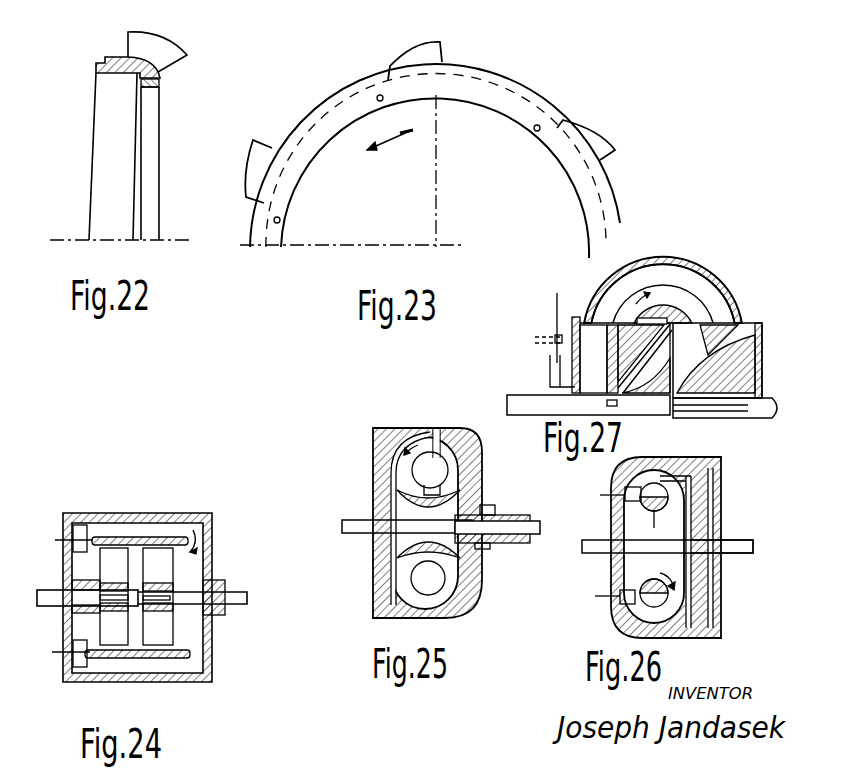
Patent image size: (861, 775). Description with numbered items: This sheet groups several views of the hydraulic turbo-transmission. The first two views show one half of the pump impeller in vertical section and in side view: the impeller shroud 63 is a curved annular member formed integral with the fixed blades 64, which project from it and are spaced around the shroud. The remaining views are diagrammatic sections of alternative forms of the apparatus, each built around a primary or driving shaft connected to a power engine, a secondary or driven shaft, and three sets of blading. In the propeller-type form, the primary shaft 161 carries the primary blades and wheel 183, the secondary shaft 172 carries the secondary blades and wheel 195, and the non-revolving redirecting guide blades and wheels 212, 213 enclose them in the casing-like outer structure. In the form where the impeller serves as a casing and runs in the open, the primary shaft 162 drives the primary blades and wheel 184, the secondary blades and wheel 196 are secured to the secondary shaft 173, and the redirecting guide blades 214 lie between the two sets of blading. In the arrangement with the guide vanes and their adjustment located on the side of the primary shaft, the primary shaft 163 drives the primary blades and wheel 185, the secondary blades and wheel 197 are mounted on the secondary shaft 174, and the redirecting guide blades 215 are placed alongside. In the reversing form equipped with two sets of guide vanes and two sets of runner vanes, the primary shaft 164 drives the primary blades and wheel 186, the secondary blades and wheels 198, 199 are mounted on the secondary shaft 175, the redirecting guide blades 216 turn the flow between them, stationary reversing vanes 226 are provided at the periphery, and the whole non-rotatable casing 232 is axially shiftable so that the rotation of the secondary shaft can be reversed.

In FIG. 22, the impeller shroud 63 is at (118, 56).
In FIG. 23, the impeller shroud 63 is at (526, 96).
In FIG. 22, the fixed blades 64 is at (171, 53).
In FIG. 23, the fixed blades 64 is at (603, 152).
In FIG. 24, the primary shaft 161 is at (55, 592).
In FIG. 25, the primary shaft 162 is at (358, 523).
In FIG. 26, the primary shaft 163 is at (593, 547).
In FIG. 27, the primary shaft 164 is at (537, 386).
In FIG. 24, the secondary shaft 172 is at (275, 583).
In FIG. 25, the secondary shaft 173 is at (526, 527).
In FIG. 26, the secondary shaft 174 is at (753, 551).
In FIG. 27, the secondary shaft 175 is at (766, 403).
In FIG. 24, the primary blades and wheel 183 is at (116, 596).
In FIG. 25, the primary blades and wheel 184 is at (451, 461).
In FIG. 26, the primary blades and wheel 185 is at (678, 509).
In FIG. 27, the primary blades and wheel 186 is at (618, 342).
In FIG. 24, the secondary blades and wheel 195 is at (159, 596).
In FIG. 25, the secondary blades and wheel 196 is at (406, 576).
In FIG. 26, the secondary blades and wheel 197 is at (651, 470).
In FIG. 27, the secondary blades and wheel 198 is at (716, 359).
In FIG. 27, the secondary blades and wheel 199 is at (757, 336).
In FIG. 24, the redirecting guide blades and wheel 212 is at (173, 518).
In FIG. 24, the redirecting guide blades and wheel 213 is at (78, 533).
In FIG. 25, the redirecting guide blades and wheel 214 is at (438, 494).
In FIG. 26, the redirecting guide blades and wheel 215 is at (616, 606).
In FIG. 27, the redirecting guide blades and wheel 216 is at (645, 355).
In FIG. 27, the stationary reversing vanes 226 is at (738, 270).
In FIG. 27, the casing 232 is at (700, 290).